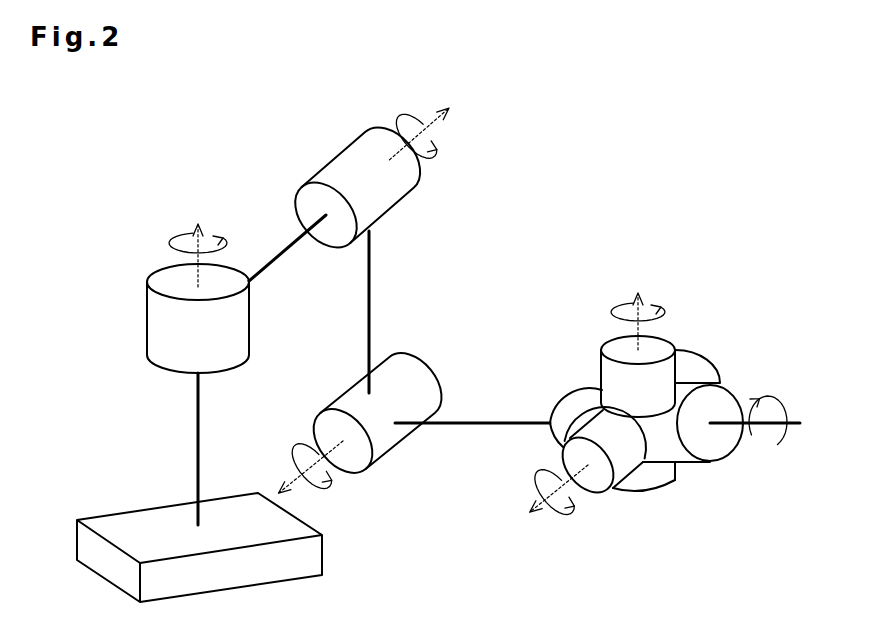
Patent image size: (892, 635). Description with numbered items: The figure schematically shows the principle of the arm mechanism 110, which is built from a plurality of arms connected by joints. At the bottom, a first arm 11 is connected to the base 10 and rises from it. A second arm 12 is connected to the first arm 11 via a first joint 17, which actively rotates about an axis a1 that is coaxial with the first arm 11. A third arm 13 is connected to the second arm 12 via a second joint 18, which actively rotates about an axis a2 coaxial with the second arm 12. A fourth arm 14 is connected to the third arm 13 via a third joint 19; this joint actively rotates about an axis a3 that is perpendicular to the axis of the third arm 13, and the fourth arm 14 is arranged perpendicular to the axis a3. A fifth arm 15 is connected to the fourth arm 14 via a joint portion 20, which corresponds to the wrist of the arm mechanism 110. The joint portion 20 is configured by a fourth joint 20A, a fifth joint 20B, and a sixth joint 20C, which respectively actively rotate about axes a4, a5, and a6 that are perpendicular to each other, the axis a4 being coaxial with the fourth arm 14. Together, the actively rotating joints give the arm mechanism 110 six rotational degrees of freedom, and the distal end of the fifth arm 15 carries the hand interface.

The arm mechanism 110 is at (188, 184).
The base 10 is at (296, 524).
The first arm 11 is at (196, 419).
The second arm 12 is at (285, 250).
The third arm 13 is at (371, 280).
The fourth arm 14 is at (480, 421).
The fifth arm 15 is at (797, 420).
The first joint 17 is at (157, 318).
The second joint 18 is at (340, 167).
The third joint 19 is at (413, 365).
The joint portion 20 is at (646, 439).
The fourth joint 20A is at (727, 450).
The fifth joint 20B is at (602, 368).
The sixth joint 20C is at (625, 478).
The axis a1 is at (183, 255).
The axis a2 is at (429, 134).
The axis a3 is at (306, 467).
The axis a4 is at (770, 439).
The axis a5 is at (659, 321).
The axis a6 is at (559, 494).